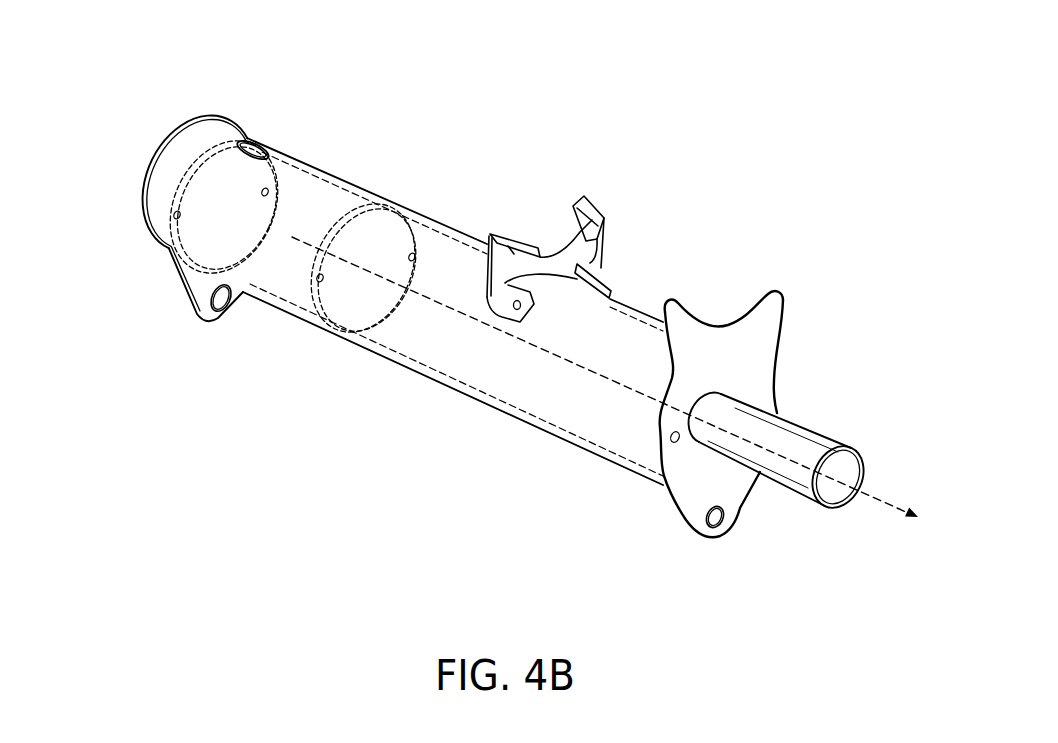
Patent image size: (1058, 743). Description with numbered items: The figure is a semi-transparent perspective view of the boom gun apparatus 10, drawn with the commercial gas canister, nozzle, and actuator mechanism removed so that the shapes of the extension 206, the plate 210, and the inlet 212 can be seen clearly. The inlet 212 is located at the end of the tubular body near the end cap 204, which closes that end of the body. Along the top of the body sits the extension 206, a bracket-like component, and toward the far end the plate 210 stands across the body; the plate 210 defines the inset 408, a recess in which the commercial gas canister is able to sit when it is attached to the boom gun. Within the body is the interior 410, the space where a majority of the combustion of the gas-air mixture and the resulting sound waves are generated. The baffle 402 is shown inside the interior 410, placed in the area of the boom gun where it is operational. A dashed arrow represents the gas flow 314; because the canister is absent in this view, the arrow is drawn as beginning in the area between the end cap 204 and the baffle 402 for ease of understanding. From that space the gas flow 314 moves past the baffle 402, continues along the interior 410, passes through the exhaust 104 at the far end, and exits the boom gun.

The apparatus 10 is at (700, 153).
The exhaust 104 is at (378, 355).
The end cap 204 is at (159, 211).
The extension 206 is at (560, 262).
The plate 210 is at (733, 497).
The inlet 212 is at (250, 123).
The gas flow 314 is at (878, 498).
The baffle 402 is at (380, 227).
The inset 408 is at (720, 295).
The interior 410 is at (506, 361).